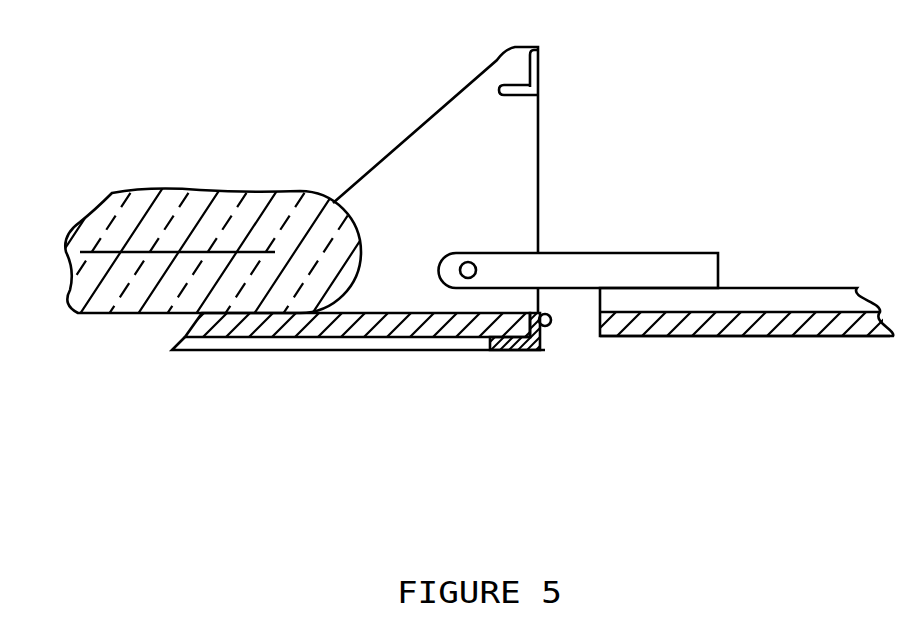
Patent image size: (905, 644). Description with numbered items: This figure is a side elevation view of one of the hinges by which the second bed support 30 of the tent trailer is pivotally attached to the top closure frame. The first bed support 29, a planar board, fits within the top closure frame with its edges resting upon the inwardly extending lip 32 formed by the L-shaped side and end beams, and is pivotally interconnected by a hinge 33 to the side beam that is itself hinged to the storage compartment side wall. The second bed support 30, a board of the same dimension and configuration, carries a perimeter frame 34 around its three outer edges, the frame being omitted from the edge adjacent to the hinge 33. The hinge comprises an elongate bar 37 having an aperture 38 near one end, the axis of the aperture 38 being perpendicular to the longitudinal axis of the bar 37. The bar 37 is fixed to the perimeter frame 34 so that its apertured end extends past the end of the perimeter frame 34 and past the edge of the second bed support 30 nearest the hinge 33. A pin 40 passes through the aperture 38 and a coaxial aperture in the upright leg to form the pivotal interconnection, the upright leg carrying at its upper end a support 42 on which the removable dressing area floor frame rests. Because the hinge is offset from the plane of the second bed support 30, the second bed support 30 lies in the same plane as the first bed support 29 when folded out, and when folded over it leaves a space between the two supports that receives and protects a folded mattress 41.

The first bed support 29 is at (257, 337).
The second bed support 30 is at (728, 320).
The lip 32 is at (327, 343).
The hinge 33 is at (549, 327).
The perimeter frame 34 is at (772, 293).
The elongate bar 37 is at (673, 265).
The aperture 38 is at (470, 264).
The pin 40 is at (465, 266).
The folded mattress 41 is at (178, 212).
The support 42 is at (535, 63).